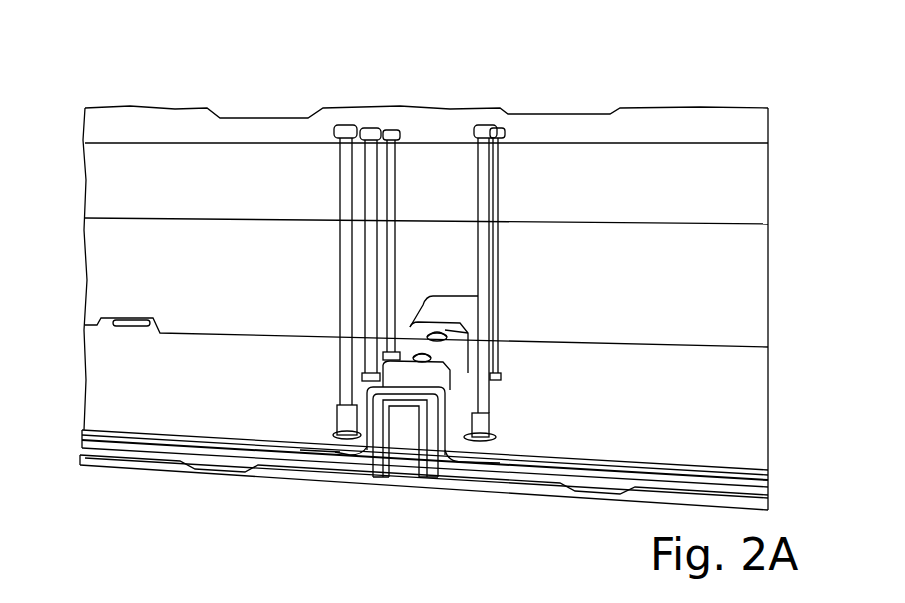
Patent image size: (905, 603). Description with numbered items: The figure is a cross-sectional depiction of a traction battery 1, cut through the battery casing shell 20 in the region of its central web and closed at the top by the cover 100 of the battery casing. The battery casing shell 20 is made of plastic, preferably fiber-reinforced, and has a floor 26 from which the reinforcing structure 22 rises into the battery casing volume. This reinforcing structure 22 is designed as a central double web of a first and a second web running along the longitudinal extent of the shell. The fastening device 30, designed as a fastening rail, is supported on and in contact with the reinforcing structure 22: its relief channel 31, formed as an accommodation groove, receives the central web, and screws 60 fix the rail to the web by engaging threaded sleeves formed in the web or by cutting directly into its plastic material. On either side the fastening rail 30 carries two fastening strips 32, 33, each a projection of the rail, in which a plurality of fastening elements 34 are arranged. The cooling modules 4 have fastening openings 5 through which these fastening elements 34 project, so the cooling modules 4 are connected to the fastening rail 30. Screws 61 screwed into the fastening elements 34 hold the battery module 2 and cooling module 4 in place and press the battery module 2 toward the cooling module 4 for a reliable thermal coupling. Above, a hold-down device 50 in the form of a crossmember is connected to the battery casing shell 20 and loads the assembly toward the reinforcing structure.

The battery arrangement 1 is at (741, 69).
The battery module 2 is at (745, 170).
The cooling module 4 is at (733, 447).
The fastening opening 5 is at (500, 400).
The battery casing shell 20 is at (87, 447).
The reinforcing structure 22 is at (403, 457).
The floor 26 is at (130, 465).
The fastening device 30 is at (445, 300).
The relief channel 31 is at (440, 440).
The first fastening strip 32 is at (305, 455).
The second fastening strip 33 is at (495, 470).
The fastening element 34 is at (337, 413).
The hold-down device 50 is at (727, 270).
The screw 60 is at (480, 297).
The screw 61 is at (393, 178).
The cover 100 is at (275, 110).